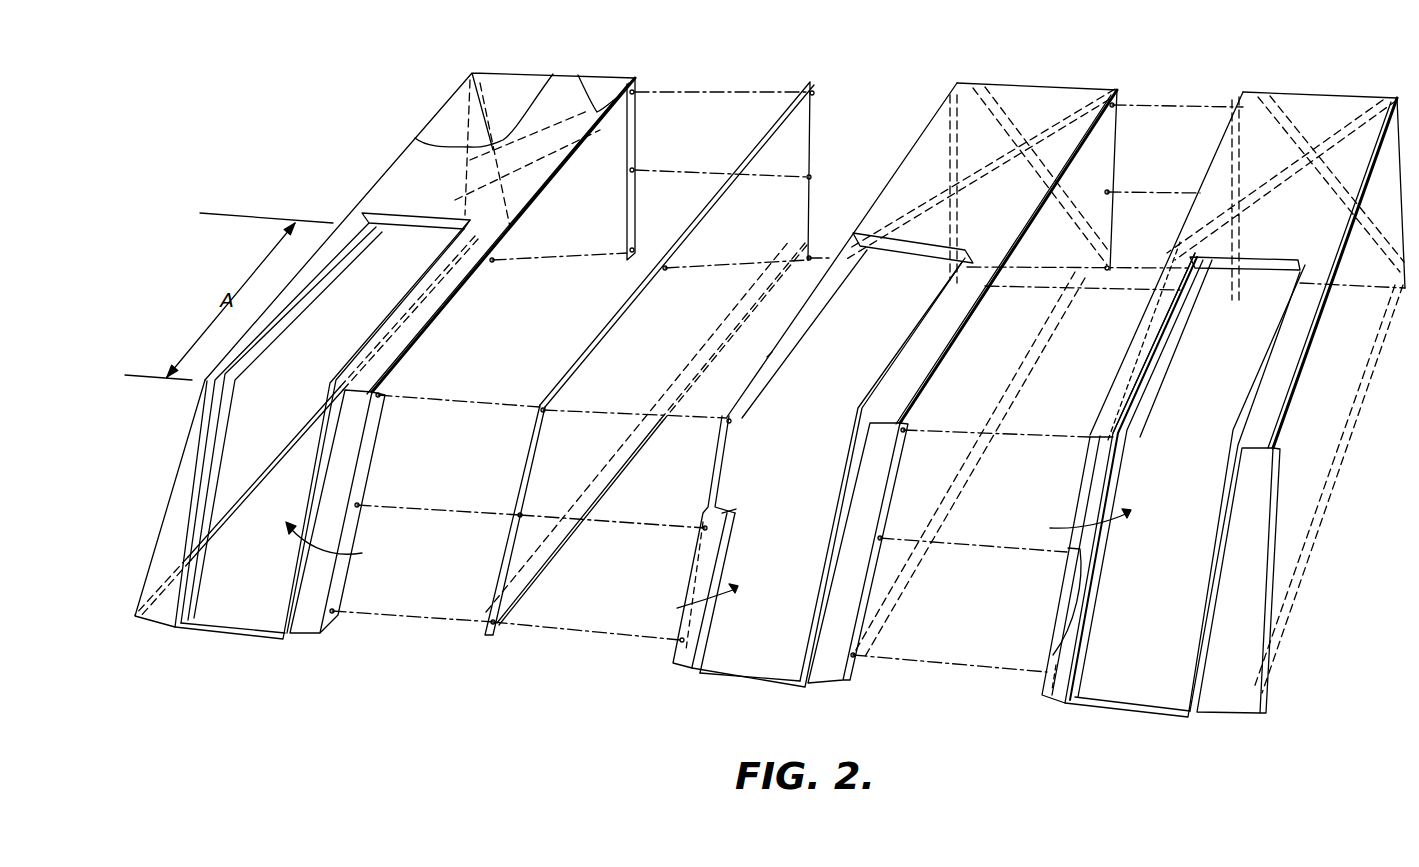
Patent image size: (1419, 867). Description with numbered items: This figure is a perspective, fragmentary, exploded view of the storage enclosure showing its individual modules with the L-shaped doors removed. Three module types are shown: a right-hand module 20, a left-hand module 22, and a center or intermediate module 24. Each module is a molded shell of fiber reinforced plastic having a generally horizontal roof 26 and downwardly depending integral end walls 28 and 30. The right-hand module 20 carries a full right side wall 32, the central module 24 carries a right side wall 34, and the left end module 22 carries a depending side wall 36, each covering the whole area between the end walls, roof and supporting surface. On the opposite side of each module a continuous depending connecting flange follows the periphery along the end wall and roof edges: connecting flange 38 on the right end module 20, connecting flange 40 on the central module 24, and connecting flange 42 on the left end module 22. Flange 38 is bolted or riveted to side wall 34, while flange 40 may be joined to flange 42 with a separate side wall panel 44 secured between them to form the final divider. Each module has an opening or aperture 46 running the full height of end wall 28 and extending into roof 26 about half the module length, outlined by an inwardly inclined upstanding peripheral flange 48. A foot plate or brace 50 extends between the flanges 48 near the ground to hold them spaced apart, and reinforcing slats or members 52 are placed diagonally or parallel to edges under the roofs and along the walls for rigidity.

The right-hand module 20 is at (1318, 92).
The left-hand module 22 is at (548, 66).
The center or intermediate module 24 is at (1028, 82).
The roof 26 is at (987, 165).
The end wall 28 is at (308, 622).
The end wall 30 is at (604, 177).
The right side wall 32 is at (1305, 405).
The right side wall 34 is at (947, 387).
The side wall 36 is at (262, 384).
The connecting flange 38 is at (1230, 282).
The connecting flange 40 is at (720, 462).
The connecting flange 42 is at (427, 340).
The side wall panel 44 is at (805, 148).
The opening or aperture 46 is at (708, 564).
The upstanding peripheral flange 48 is at (293, 582).
The foot plate or brace 50 is at (228, 635).
The reinforcing slats or members 52 is at (467, 75).